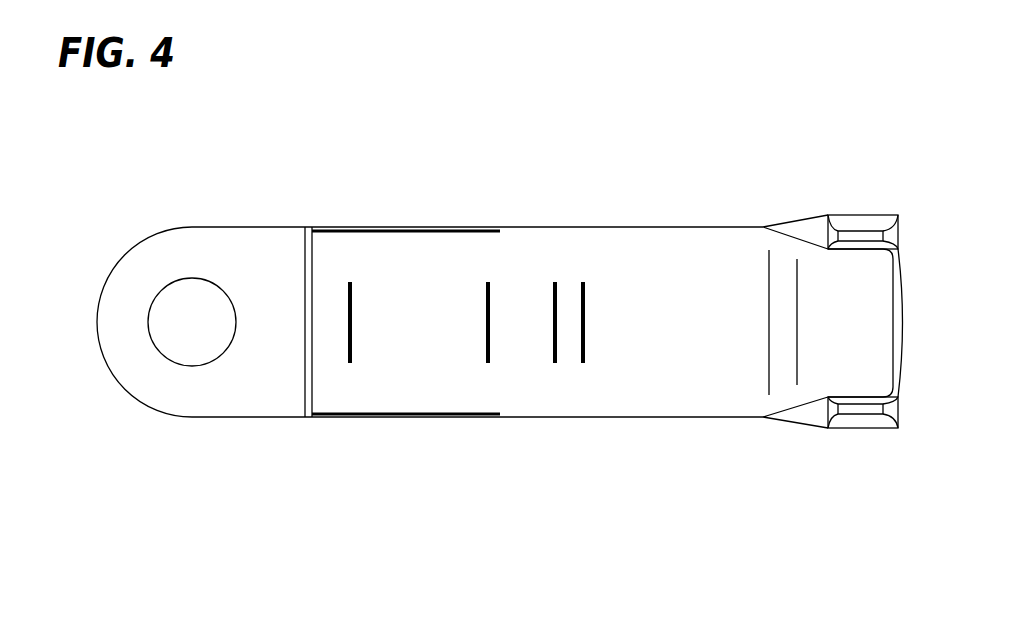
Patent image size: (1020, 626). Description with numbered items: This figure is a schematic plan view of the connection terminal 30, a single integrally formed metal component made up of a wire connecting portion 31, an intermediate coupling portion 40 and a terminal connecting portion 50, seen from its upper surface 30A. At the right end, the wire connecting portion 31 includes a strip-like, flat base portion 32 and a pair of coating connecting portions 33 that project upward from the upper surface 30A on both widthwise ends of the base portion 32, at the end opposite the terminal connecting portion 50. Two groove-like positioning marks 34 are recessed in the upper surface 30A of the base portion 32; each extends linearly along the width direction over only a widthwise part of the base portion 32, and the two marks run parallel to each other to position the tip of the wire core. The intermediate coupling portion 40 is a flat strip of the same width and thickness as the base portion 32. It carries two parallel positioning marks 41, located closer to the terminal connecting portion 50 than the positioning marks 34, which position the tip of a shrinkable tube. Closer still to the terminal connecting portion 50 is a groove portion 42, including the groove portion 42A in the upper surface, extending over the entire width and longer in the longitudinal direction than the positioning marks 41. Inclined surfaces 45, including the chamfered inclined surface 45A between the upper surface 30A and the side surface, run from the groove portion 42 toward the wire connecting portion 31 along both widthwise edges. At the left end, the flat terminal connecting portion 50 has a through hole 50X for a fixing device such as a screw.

The connection terminal 30 is at (496, 321).
The upper surface 30A is at (613, 245).
The wire connecting portion 31 is at (814, 369).
The base portion 32 is at (725, 400).
The coating connecting portion 33 is at (865, 350).
The positioning mark 34 is at (553, 292).
The intermediate coupling portion 40 is at (406, 325).
The positioning mark 41 is at (352, 302).
The groove portion 42 is at (331, 285).
The groove portion 42A is at (310, 250).
The inclined surface 45 is at (406, 325).
The inclined surface 45A is at (458, 228).
The terminal connecting portion 50 is at (173, 324).
The through hole 50X is at (231, 326).